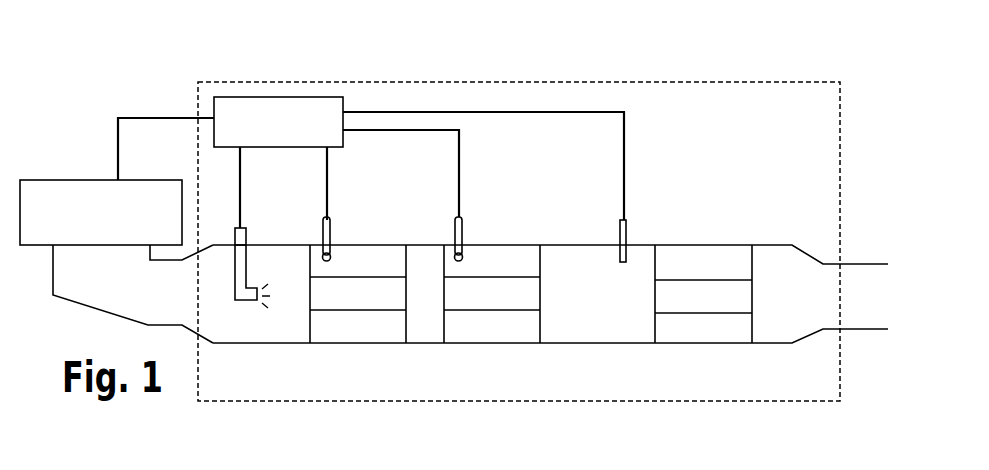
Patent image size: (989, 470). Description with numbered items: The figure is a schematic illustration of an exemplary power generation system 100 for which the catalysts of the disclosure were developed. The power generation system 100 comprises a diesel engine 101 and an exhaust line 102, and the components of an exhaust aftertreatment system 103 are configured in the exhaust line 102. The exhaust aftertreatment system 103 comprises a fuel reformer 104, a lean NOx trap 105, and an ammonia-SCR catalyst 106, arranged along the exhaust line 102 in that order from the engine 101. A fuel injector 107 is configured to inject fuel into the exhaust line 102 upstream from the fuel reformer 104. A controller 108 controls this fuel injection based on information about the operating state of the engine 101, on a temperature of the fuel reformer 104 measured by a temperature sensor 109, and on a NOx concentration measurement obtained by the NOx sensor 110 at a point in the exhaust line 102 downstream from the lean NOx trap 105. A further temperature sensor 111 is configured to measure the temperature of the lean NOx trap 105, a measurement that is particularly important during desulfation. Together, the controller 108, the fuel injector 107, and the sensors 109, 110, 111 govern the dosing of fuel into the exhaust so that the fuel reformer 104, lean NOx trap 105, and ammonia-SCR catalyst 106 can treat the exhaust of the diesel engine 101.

The power generation system 100 is at (162, 84).
The diesel engine 101 is at (93, 178).
The exhaust line 102 is at (272, 343).
The exhaust aftertreatment system 103 is at (752, 82).
The fuel reformer 104 is at (365, 245).
The lean NOx trap 105 is at (498, 245).
The ammonia-SCR catalyst 106 is at (703, 245).
The fuel injector 107 is at (237, 228).
The controller 108 is at (303, 97).
The temperature sensor 109 is at (329, 222).
The NOx sensor 110 is at (627, 222).
The temperature sensor 111 is at (462, 222).